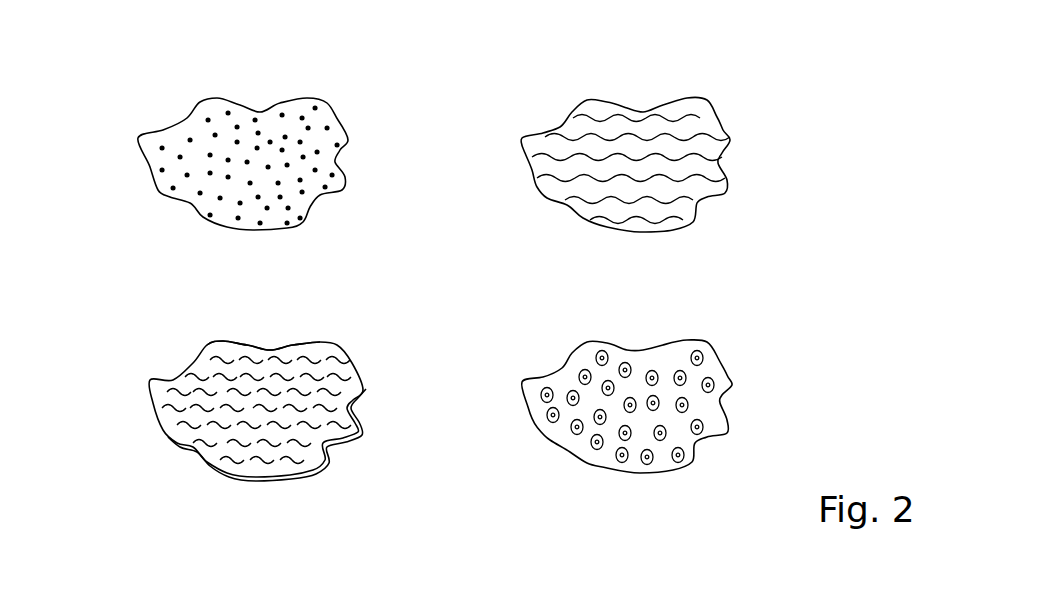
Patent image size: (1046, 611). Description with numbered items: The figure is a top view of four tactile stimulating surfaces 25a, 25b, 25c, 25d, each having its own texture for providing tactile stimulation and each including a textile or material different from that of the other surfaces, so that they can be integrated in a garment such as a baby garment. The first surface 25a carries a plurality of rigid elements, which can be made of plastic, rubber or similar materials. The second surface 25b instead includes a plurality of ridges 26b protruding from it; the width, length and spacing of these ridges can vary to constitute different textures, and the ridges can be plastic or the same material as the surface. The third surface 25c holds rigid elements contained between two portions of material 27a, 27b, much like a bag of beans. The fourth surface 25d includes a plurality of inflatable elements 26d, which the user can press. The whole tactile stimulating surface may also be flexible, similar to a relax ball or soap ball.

The tactile stimulating surface 25a is at (270, 100).
The tactile stimulating surface 25b is at (660, 100).
The tactile stimulating surface 25c is at (277, 342).
The tactile stimulating surface 25d is at (645, 347).
The ridges 26b is at (693, 177).
The inflatable elements 26d is at (703, 427).
The portion of material 27a is at (227, 341).
The portion of material 27b is at (240, 481).